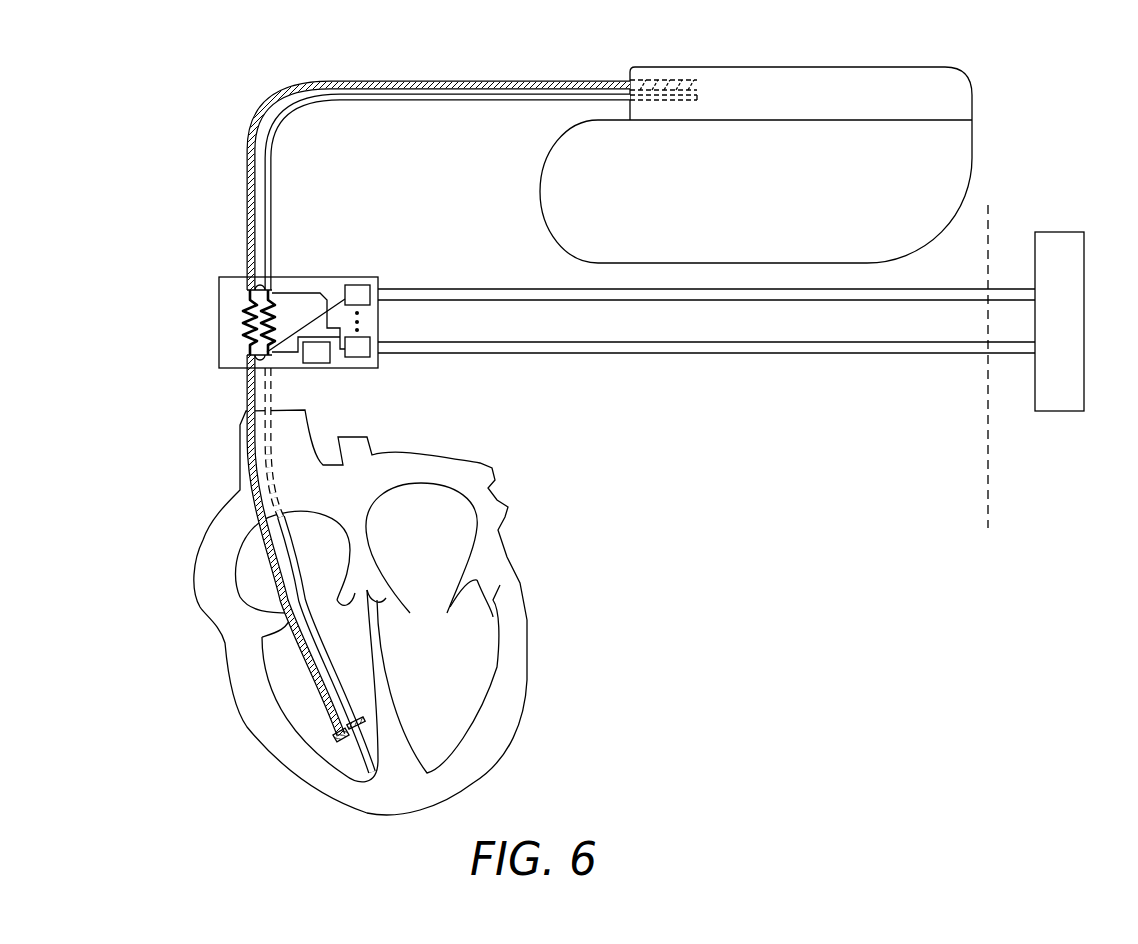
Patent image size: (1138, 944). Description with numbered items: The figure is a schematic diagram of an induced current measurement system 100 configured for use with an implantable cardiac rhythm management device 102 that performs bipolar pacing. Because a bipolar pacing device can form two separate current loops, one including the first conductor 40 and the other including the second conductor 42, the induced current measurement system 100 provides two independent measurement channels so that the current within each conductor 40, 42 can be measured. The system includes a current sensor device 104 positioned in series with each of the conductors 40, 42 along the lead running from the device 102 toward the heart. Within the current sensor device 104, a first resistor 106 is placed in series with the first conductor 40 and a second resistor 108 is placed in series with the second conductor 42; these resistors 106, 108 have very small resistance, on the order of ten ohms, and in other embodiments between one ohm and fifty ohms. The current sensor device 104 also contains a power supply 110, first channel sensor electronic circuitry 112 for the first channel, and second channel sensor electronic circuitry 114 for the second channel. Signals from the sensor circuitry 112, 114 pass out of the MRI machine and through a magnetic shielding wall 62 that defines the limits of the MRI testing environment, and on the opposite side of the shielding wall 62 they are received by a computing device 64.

The first conductor 40 is at (359, 78).
The second conductor 42 is at (359, 104).
The magnetic shielding wall 62 is at (988, 492).
The computing device 64 is at (1058, 412).
The induced current measurement system 100 is at (401, 383).
The implantable cardiac rhythm management device 102 is at (1026, 103).
The current sensor device 104 is at (218, 352).
The first resistor 106 is at (246, 309).
The second resistor 108 is at (274, 333).
The power supply 110 is at (316, 364).
The first channel sensor electronic circuitry 112 is at (360, 284).
The second channel sensor electronic circuitry 114 is at (360, 358).